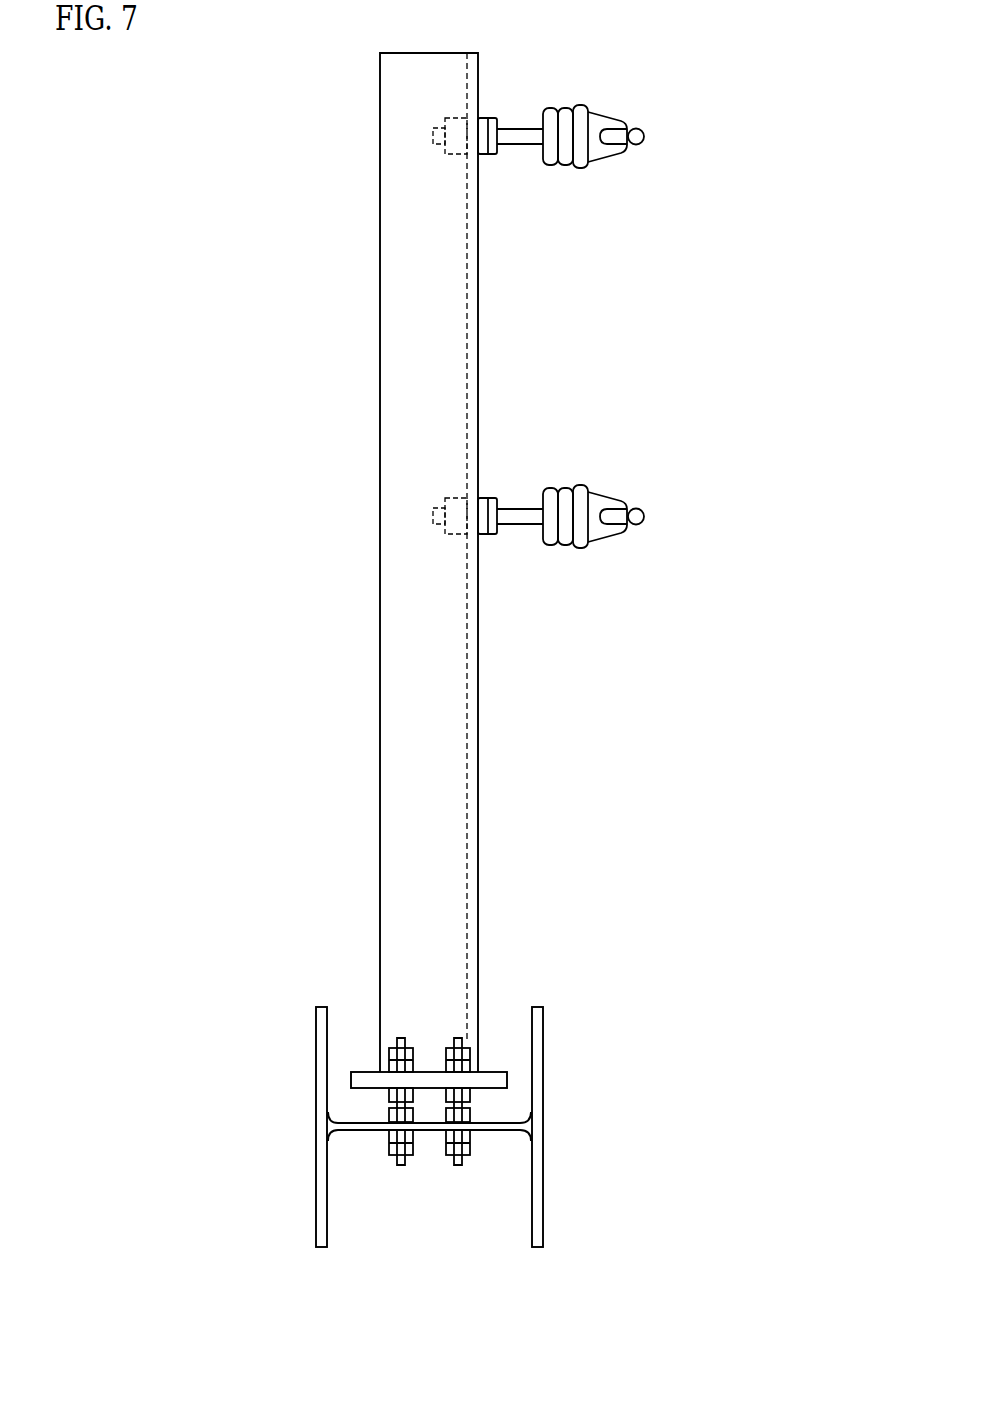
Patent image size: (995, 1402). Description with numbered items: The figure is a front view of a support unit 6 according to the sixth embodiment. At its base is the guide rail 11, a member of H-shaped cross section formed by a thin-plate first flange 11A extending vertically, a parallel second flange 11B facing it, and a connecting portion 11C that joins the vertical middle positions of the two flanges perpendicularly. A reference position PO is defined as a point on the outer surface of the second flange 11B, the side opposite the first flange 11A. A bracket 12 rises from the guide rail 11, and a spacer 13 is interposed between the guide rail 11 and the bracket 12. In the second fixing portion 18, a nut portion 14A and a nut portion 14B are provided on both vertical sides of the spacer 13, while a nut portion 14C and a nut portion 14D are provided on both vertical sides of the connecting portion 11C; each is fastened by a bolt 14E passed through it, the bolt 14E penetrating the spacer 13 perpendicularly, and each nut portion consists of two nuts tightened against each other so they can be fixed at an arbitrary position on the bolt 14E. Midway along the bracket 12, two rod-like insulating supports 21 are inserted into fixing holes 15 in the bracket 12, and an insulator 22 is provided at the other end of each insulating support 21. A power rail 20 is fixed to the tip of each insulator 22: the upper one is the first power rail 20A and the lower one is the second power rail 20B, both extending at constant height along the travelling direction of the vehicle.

The support unit 6 is at (199, 163).
The guide rail 11 is at (416, 1163).
The first flange 11A is at (322, 1052).
The second flange 11B is at (537, 1033).
The connecting portion 11C is at (502, 1133).
The reference position PO is at (543, 1193).
The bracket 12 is at (392, 91).
The spacer 13 is at (497, 1080).
The nut portion 14A is at (412, 1057).
The nut portion 14B is at (389, 1098).
The nut portion 14C is at (389, 1112).
The nut portion 14D is at (389, 1148).
The bolt 14E is at (400, 1040).
The second fixing portion 18 is at (392, 1090).
The fixing hole 15 is at (469, 130).
The power rail 20 is at (629, 337).
The first power rail 20A is at (639, 141).
The second power rail 20B is at (639, 521).
The insulating support 21 is at (629, 337).
The insulator 22 is at (548, 166).